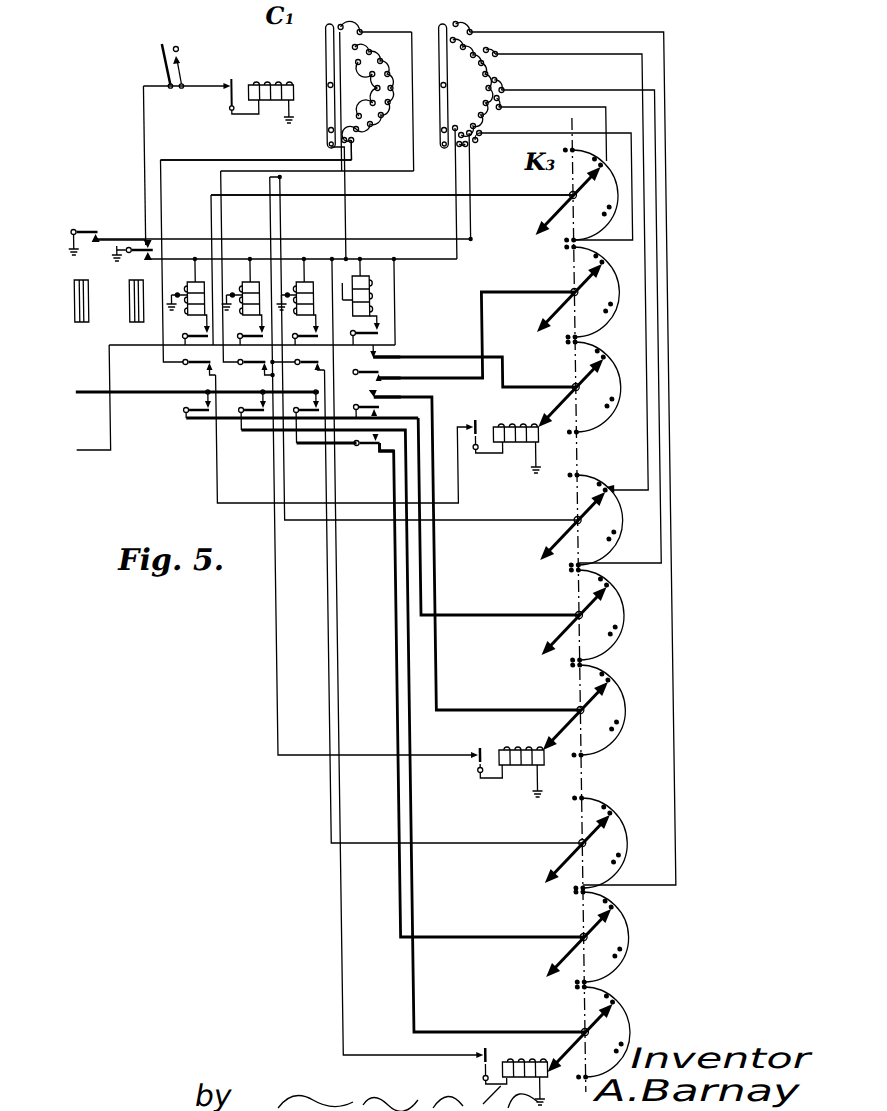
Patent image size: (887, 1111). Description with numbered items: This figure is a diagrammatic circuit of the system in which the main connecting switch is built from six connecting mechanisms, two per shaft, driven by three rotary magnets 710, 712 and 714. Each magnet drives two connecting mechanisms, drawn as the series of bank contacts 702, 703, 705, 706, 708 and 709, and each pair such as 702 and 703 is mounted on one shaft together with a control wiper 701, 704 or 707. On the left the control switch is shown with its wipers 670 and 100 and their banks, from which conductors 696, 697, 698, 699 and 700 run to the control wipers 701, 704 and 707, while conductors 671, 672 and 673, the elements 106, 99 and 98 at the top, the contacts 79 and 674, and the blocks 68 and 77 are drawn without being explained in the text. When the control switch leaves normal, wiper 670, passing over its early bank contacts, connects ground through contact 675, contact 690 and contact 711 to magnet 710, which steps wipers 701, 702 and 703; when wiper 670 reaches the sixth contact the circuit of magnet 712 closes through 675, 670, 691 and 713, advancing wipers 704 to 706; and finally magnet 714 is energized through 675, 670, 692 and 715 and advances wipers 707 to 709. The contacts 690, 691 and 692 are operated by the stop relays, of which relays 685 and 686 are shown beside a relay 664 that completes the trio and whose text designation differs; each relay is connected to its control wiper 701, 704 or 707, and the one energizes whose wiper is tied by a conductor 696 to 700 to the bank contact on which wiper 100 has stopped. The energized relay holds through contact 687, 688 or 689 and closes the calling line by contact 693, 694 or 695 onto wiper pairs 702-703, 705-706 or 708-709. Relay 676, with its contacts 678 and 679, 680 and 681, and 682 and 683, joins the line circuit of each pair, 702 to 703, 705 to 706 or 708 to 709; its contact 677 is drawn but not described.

The switch 106 is at (180, 47).
The contact 99 is at (236, 72).
The relay 98 is at (290, 84).
The wiper of the control switch 670 is at (334, 106).
The conductor 671 is at (290, 162).
The conductor 672 is at (398, 156).
The conductor 673 is at (408, 180).
The wiper 100 is at (444, 118).
The conductor 696 is at (582, 24).
The conductor 697 is at (582, 50).
The conductor 698 is at (582, 85).
The conductor 699 is at (553, 127).
The conductor 700 is at (510, 135).
The contact 79 is at (96, 221).
The contact 674 is at (145, 241).
The contact 675 is at (146, 264).
The terminal block 68 is at (123, 301).
The terminal block 77 is at (86, 324).
The relay 664 is at (200, 282).
The relay 685 is at (256, 282).
The relay 686 is at (300, 296).
The contact 687 is at (190, 332).
The contact 688 is at (245, 332).
The contact 689 is at (301, 332).
The relay 676 is at (348, 302).
The relay contact 677 is at (380, 329).
The contact 690 is at (197, 372).
The contact 691 is at (254, 372).
The contact 692 is at (307, 372).
The contact 693 is at (193, 404).
The contact 694 is at (250, 410).
The contact 695 is at (301, 416).
The contact of relay 676 678 is at (371, 355).
The contact of relay 676 679 is at (372, 378).
The contact of relay 676 680 is at (372, 397).
The contact of relay 676 681 is at (384, 408).
The contact of relay 676 682 is at (372, 446).
The contact of relay 676 683 is at (372, 452).
The control wiper 701 is at (556, 207).
The connecting mechanism wiper 702 is at (566, 300).
The connecting mechanism wiper 703 is at (573, 376).
The control wiper 704 is at (575, 507).
The connecting mechanism wiper 705 is at (582, 615).
The connecting mechanism wiper 706 is at (580, 703).
The control wiper 707 is at (586, 843).
The connecting mechanism wiper 708 is at (587, 937).
The connecting mechanism wiper 709 is at (588, 1032).
The rotary magnet 710 is at (517, 448).
The contact 711 is at (478, 428).
The rotary magnet 712 is at (522, 774).
The contact 713 is at (476, 757).
The rotary magnet 714 is at (525, 1071).
The contact 715 is at (477, 1066).